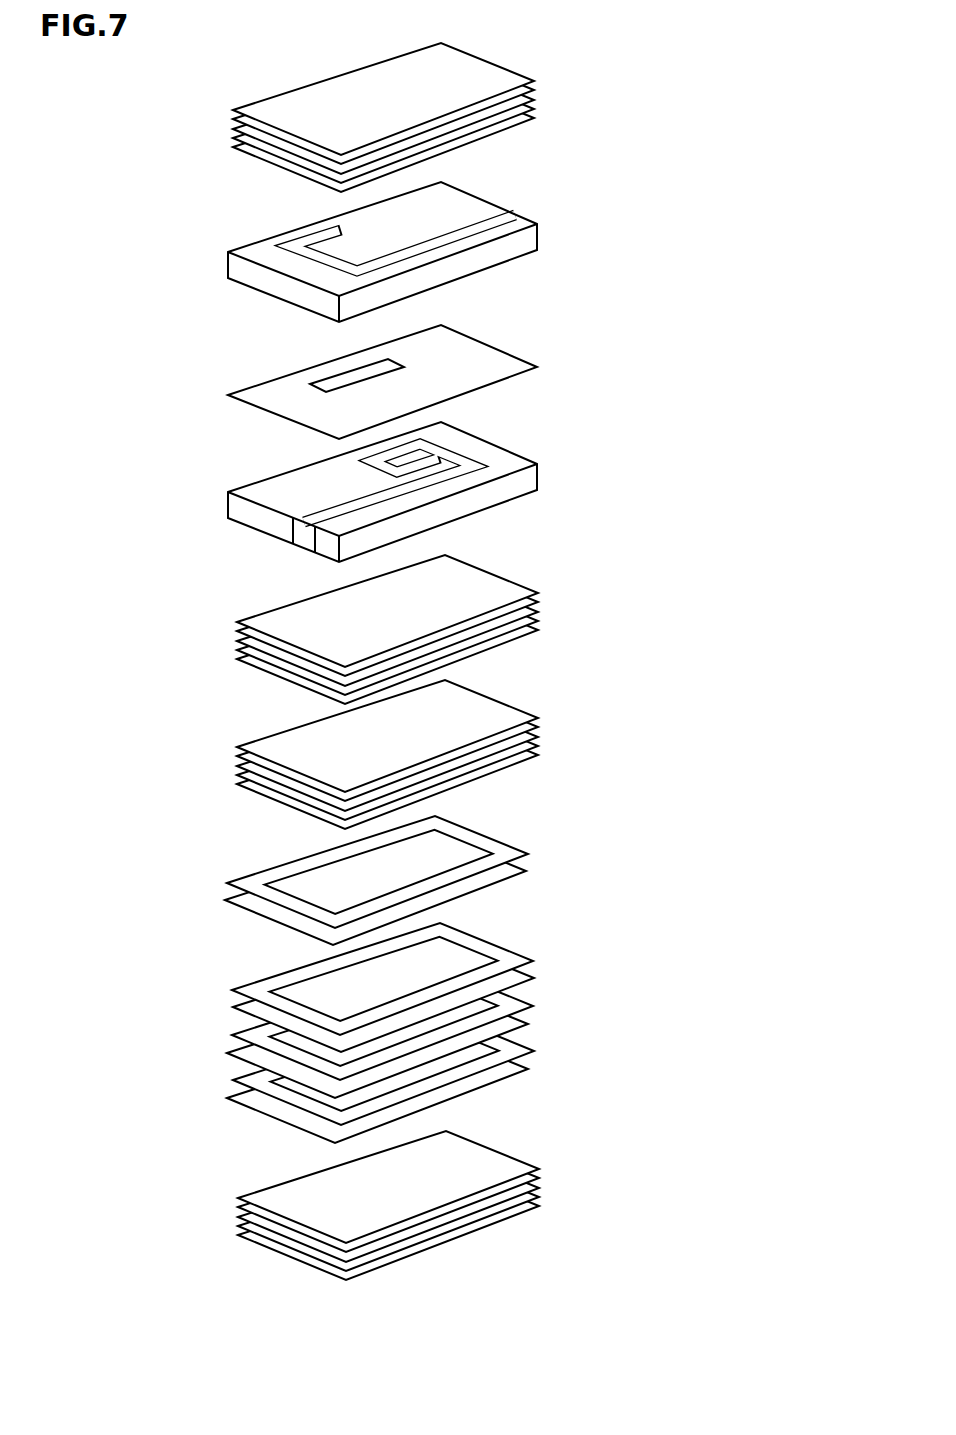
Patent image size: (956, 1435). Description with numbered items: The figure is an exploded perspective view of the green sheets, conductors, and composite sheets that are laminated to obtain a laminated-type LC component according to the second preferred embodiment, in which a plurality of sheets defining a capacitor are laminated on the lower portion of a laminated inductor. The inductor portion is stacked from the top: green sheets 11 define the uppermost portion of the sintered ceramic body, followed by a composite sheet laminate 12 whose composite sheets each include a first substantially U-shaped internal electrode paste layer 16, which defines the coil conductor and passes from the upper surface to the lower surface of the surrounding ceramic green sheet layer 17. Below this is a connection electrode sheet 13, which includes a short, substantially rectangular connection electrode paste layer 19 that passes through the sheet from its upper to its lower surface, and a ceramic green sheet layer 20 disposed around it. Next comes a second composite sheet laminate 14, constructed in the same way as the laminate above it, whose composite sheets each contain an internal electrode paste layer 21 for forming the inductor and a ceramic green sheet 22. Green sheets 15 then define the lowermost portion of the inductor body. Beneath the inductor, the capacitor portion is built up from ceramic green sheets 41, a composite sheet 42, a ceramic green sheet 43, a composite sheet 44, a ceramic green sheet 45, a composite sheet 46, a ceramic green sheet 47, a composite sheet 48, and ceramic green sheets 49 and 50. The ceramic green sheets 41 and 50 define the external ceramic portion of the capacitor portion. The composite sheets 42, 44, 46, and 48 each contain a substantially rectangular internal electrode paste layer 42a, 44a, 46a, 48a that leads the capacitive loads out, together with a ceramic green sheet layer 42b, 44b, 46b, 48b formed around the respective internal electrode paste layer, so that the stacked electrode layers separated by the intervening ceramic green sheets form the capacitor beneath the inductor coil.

The green sheets 11 is at (342, 73).
The composite sheet laminate 12 is at (413, 252).
The connection electrode sheet 13 is at (412, 374).
The composite sheet laminate 14 is at (418, 485).
The green sheets 15 is at (498, 578).
The internal electrode paste layer 16 is at (502, 221).
The ceramic green sheet layer 17 is at (262, 247).
The connection electrode paste layer 19 is at (352, 377).
The ceramic green sheet layer 20 is at (473, 350).
The internal electrode paste layer 21 is at (333, 510).
The ceramic green sheet 22 is at (483, 448).
The ceramic green sheets 41 is at (537, 737).
The composite sheet 42 is at (393, 872).
The internal electrode paste layer 42a is at (310, 871).
The ceramic green sheet layer 42b is at (256, 874).
The ceramic green sheet 43 is at (503, 883).
The composite sheet 44 is at (371, 974).
The internal electrode paste layer 44a is at (333, 982).
The ceramic green sheet layer 44b is at (258, 985).
The ceramic green sheet 45 is at (531, 979).
The composite sheet 46 is at (370, 1024).
The internal electrode paste layer 46a is at (276, 1034).
The ceramic green sheet layer 46b is at (232, 1036).
The ceramic green sheet 47 is at (533, 1028).
The composite sheet 48 is at (361, 1089).
The internal electrode paste layer 48a is at (303, 1102).
The ceramic green sheet layer 48b is at (482, 1072).
The ceramic green sheets 49 is at (234, 1105).
The ceramic green sheets 50 is at (583, 1187).